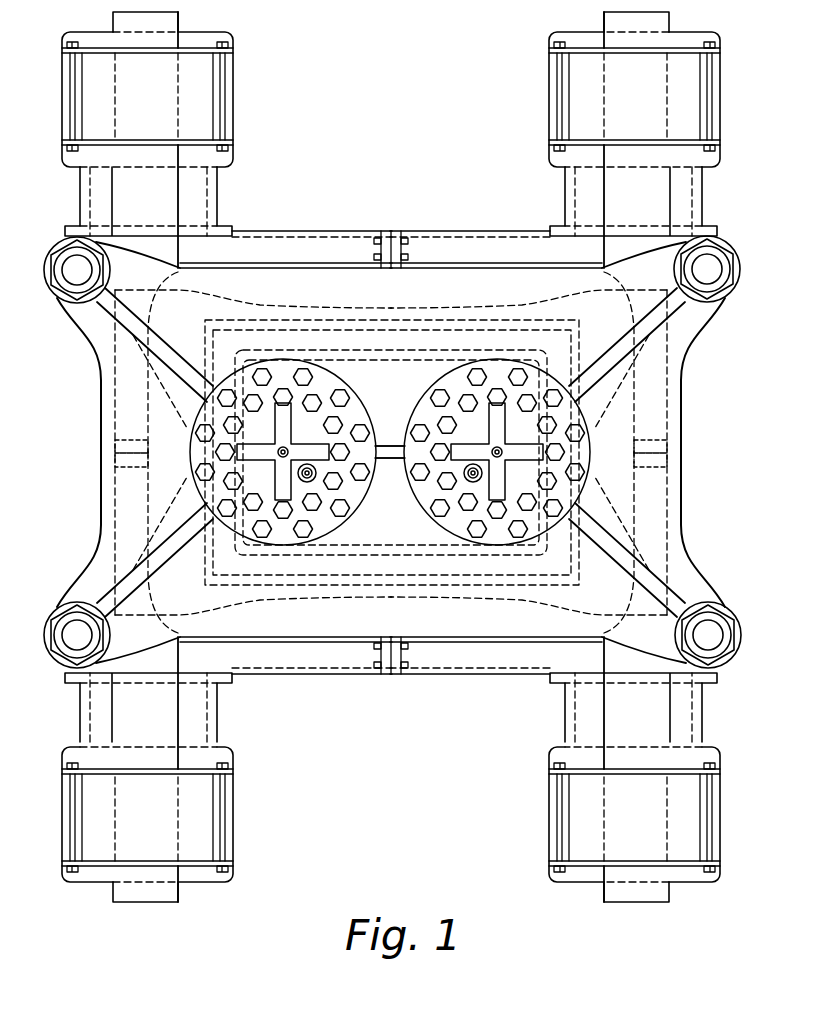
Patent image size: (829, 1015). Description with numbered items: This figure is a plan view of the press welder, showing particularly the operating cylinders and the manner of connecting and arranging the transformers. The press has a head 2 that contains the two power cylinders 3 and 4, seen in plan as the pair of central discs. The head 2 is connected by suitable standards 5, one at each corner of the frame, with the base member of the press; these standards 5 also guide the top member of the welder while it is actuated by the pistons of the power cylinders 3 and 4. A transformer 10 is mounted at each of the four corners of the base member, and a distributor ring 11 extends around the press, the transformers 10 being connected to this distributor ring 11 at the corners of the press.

The head 2 is at (620, 417).
The power cylinder 3 is at (488, 378).
The power cylinder 4 is at (281, 378).
The standards 5 is at (67, 267).
The transformer 10 is at (203, 92).
The distributor ring 11 is at (123, 412).